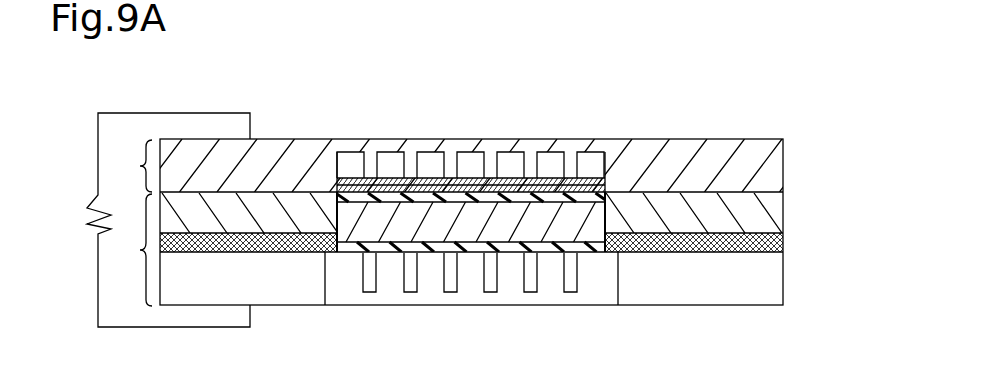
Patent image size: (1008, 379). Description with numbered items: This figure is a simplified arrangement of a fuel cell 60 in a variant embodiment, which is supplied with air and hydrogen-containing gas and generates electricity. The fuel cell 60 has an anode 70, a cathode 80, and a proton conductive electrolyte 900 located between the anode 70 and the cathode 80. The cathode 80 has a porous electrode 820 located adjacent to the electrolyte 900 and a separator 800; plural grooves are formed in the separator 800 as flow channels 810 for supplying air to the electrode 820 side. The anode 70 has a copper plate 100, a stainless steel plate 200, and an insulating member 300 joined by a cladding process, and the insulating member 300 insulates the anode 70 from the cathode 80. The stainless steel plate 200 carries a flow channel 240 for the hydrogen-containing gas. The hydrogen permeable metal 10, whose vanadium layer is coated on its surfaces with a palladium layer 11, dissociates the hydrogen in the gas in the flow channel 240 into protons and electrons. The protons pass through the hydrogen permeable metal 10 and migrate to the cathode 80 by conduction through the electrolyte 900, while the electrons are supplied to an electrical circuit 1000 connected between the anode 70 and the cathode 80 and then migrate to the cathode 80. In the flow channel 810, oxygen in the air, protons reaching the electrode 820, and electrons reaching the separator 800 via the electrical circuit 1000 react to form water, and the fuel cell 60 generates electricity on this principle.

The fuel cell 60 is at (665, 119).
The electrical circuit 1000 is at (215, 113).
The cathode 80 is at (132, 166).
The anode 70 is at (132, 250).
The separator 800 is at (783, 162).
The copper plate 100 is at (783, 207).
The insulating member 300 is at (783, 240).
The stainless steel plate 200 is at (783, 279).
The flow channel 240 is at (390, 285).
The flow channels 810 is at (510, 160).
The porous electrode 820 is at (450, 180).
The proton conductive electrolyte 900 is at (370, 183).
The palladium layer 11 is at (572, 190).
The hydrogen permeable metal 10 is at (468, 255).